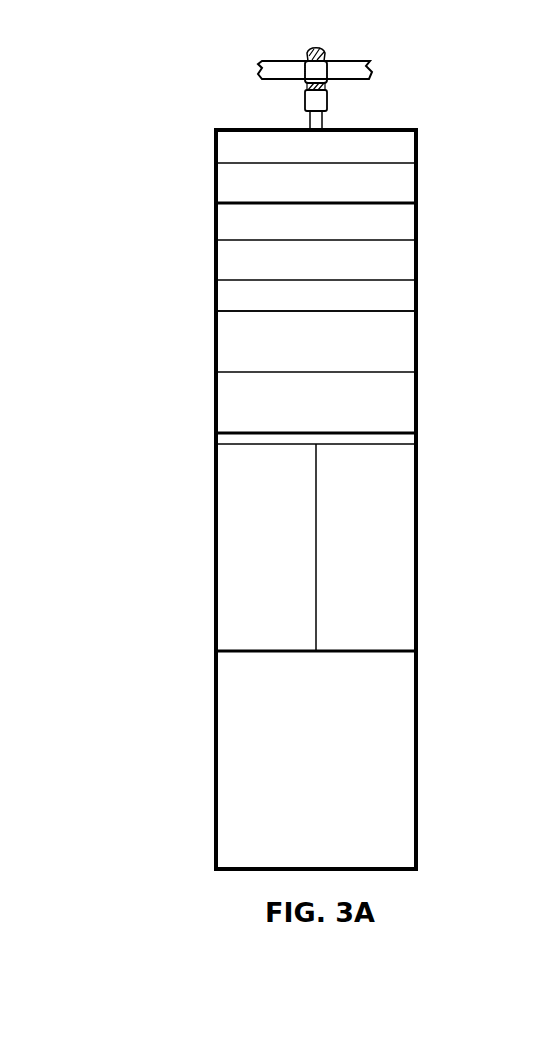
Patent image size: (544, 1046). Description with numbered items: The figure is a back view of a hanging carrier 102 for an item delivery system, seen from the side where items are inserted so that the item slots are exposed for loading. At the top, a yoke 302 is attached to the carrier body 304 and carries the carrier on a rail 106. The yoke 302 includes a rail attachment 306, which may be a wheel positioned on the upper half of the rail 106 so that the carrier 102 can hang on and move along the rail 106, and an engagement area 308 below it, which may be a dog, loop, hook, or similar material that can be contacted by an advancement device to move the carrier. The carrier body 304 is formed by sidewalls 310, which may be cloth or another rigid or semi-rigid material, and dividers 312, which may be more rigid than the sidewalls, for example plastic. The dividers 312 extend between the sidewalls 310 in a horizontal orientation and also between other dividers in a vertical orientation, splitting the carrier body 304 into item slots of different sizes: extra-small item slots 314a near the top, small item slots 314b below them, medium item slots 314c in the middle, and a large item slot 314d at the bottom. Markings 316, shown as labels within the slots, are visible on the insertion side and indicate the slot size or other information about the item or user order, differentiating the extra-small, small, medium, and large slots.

The carrier 102 is at (193, 60).
The rail 106 is at (365, 68).
The yoke 302 is at (262, 98).
The carrier body 304 is at (445, 228).
The rail attachments 306 is at (322, 50).
The engagement area 308 is at (330, 98).
The sidewalls 310 is at (418, 415).
The dividers 312 is at (315, 477).
The extra-small item slots 314a is at (235, 259).
The small item slots 314b is at (235, 402).
The medium item slots 314c is at (235, 545).
The large item slots 314d is at (235, 757).
The markings 316 is at (300, 181).